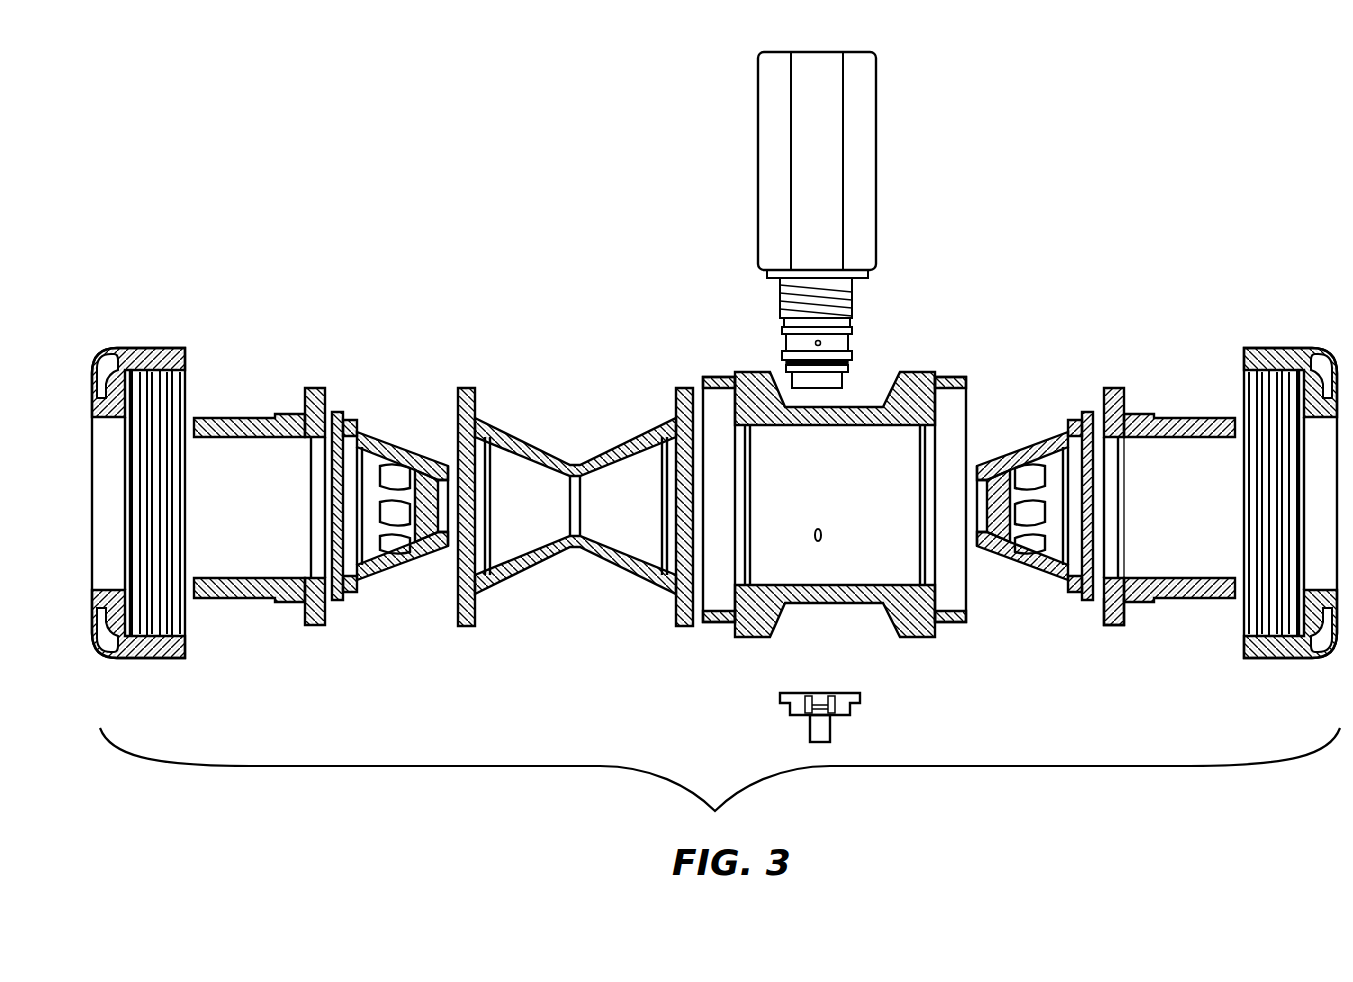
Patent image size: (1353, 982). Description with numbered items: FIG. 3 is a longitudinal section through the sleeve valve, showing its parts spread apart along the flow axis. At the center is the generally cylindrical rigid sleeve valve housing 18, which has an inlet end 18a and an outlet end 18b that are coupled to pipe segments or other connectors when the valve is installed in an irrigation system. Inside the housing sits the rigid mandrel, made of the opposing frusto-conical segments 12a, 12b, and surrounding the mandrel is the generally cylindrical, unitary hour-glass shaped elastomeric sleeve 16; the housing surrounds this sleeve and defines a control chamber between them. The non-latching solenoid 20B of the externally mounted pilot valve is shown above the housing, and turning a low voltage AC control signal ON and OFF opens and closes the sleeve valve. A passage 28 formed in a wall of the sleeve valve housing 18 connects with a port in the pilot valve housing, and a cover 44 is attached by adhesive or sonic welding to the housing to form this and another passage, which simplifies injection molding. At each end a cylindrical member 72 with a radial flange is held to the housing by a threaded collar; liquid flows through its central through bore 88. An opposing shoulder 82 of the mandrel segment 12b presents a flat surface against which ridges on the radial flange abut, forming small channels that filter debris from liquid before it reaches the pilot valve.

The frusto-conical segment 12a is at (394, 505).
The frusto-conical segment 12b is at (1035, 505).
The elastomeric sleeve 16 is at (510, 445).
The sleeve valve housing 18 is at (841, 479).
The inlet end 18a is at (712, 380).
The outlet end 18b is at (958, 380).
The non-latching solenoid 20B is at (878, 148).
The passage 28 is at (822, 538).
The cover 44 is at (838, 697).
The cylindrical member 72 is at (1133, 513).
The shoulder 82 is at (1086, 602).
The central through bore 88 is at (1194, 522).